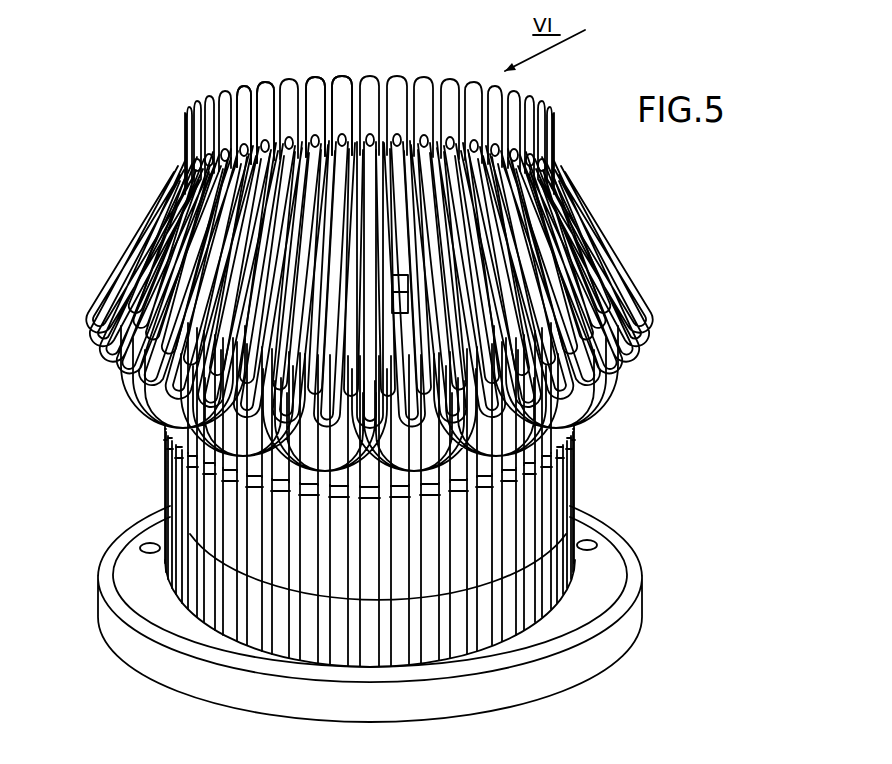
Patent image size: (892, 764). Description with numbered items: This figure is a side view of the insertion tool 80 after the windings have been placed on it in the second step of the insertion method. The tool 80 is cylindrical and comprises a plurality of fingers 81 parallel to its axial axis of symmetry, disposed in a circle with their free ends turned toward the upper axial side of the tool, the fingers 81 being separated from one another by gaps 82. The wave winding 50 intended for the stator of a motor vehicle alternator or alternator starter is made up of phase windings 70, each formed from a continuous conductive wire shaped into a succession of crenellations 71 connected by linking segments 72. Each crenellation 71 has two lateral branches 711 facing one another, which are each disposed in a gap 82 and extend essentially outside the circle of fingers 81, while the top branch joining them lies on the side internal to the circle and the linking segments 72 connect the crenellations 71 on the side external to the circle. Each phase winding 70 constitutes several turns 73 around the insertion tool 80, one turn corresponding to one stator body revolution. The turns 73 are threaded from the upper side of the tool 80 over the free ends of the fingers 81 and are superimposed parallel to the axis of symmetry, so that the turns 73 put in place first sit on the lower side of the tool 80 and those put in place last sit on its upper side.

The wave winding 50 is at (632, 243).
The phase winding 70 is at (168, 170).
The crenellation 71 is at (428, 82).
The lateral branch 711 is at (384, 88).
The linking segment 72 is at (570, 492).
The turn 73 is at (124, 248).
The insertion tool 80 is at (604, 688).
The finger 81 is at (278, 84).
The gap 82 is at (350, 80).